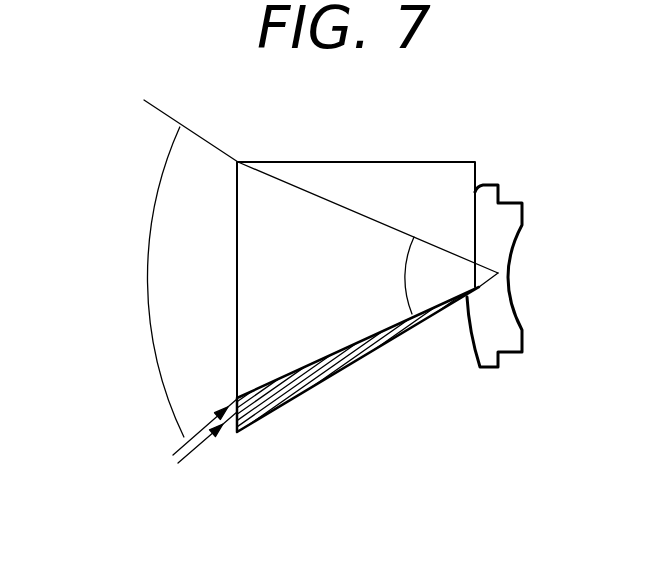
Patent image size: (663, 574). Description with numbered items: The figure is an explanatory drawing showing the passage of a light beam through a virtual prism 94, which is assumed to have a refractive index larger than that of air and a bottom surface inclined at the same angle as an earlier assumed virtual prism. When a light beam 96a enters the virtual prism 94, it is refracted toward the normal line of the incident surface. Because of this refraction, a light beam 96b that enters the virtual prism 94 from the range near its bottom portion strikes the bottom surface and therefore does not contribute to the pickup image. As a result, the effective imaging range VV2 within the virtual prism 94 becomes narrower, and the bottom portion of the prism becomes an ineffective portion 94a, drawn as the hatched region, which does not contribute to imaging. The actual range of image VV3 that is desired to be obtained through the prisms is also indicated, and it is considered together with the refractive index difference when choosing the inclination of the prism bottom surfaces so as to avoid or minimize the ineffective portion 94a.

The virtual prism 94 is at (394, 172).
The ineffective portion 94a is at (291, 401).
The light beam 96a is at (191, 440).
The light beam 96b is at (202, 444).
The effective imaging range VV2 is at (406, 272).
The actual range of image VV3 is at (147, 300).